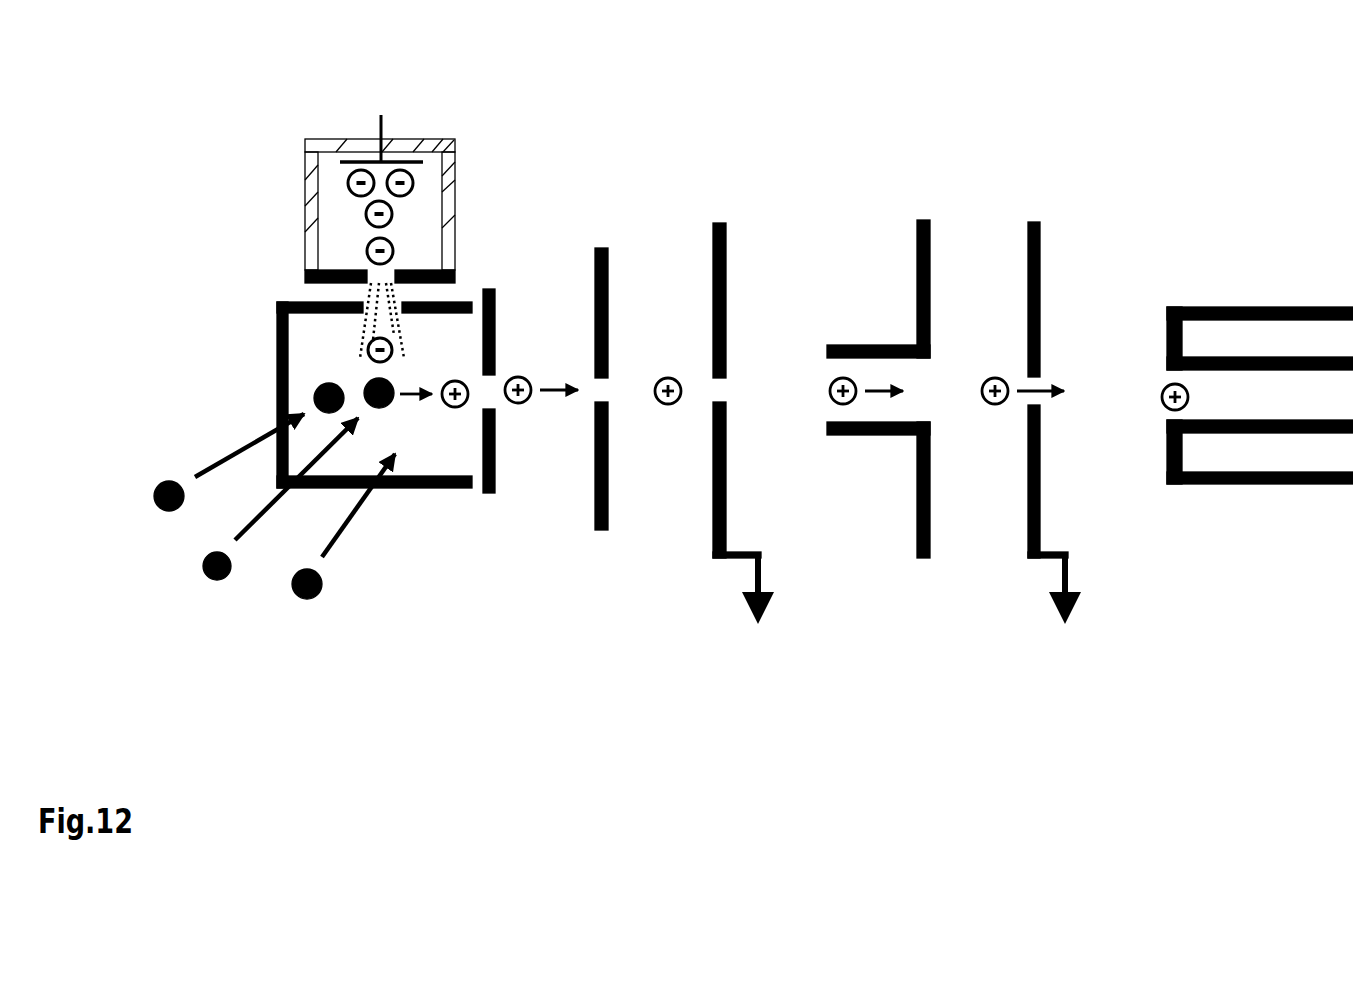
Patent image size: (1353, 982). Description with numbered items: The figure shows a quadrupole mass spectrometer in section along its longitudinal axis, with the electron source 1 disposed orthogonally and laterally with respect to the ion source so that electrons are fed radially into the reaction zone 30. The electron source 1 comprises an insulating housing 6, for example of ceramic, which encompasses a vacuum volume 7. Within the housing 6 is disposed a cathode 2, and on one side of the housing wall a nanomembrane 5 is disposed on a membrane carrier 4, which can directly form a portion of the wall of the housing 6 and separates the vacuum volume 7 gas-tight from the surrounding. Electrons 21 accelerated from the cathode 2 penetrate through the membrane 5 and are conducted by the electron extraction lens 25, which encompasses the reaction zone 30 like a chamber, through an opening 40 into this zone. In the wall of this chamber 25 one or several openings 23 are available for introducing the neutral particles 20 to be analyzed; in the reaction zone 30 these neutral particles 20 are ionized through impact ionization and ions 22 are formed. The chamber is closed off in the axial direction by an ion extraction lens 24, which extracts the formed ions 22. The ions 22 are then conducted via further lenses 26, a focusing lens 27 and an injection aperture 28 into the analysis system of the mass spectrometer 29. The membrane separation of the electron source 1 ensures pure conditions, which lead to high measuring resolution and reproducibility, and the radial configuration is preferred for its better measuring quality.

The electron source 1 is at (329, 131).
The cathode 2 is at (413, 162).
The membrane carrier 4 is at (458, 274).
The nanomembrane 5 is at (371, 268).
The insulating housing 6 is at (448, 168).
The vacuum volume 7 is at (349, 229).
The neutral particles 20 is at (305, 397).
The electrons 21 is at (397, 212).
The ions 22 is at (520, 370).
The openings 23 is at (423, 432).
The ion extraction lens 24 is at (595, 467).
The electron extraction lens 25 is at (298, 302).
The further lenses 26 is at (708, 542).
The focusing lens 27 is at (917, 528).
The injection aperture 28 is at (1028, 525).
The mass spectrometer 29 is at (1222, 485).
The reaction zone 30 is at (345, 368).
The opening 40 is at (366, 310).